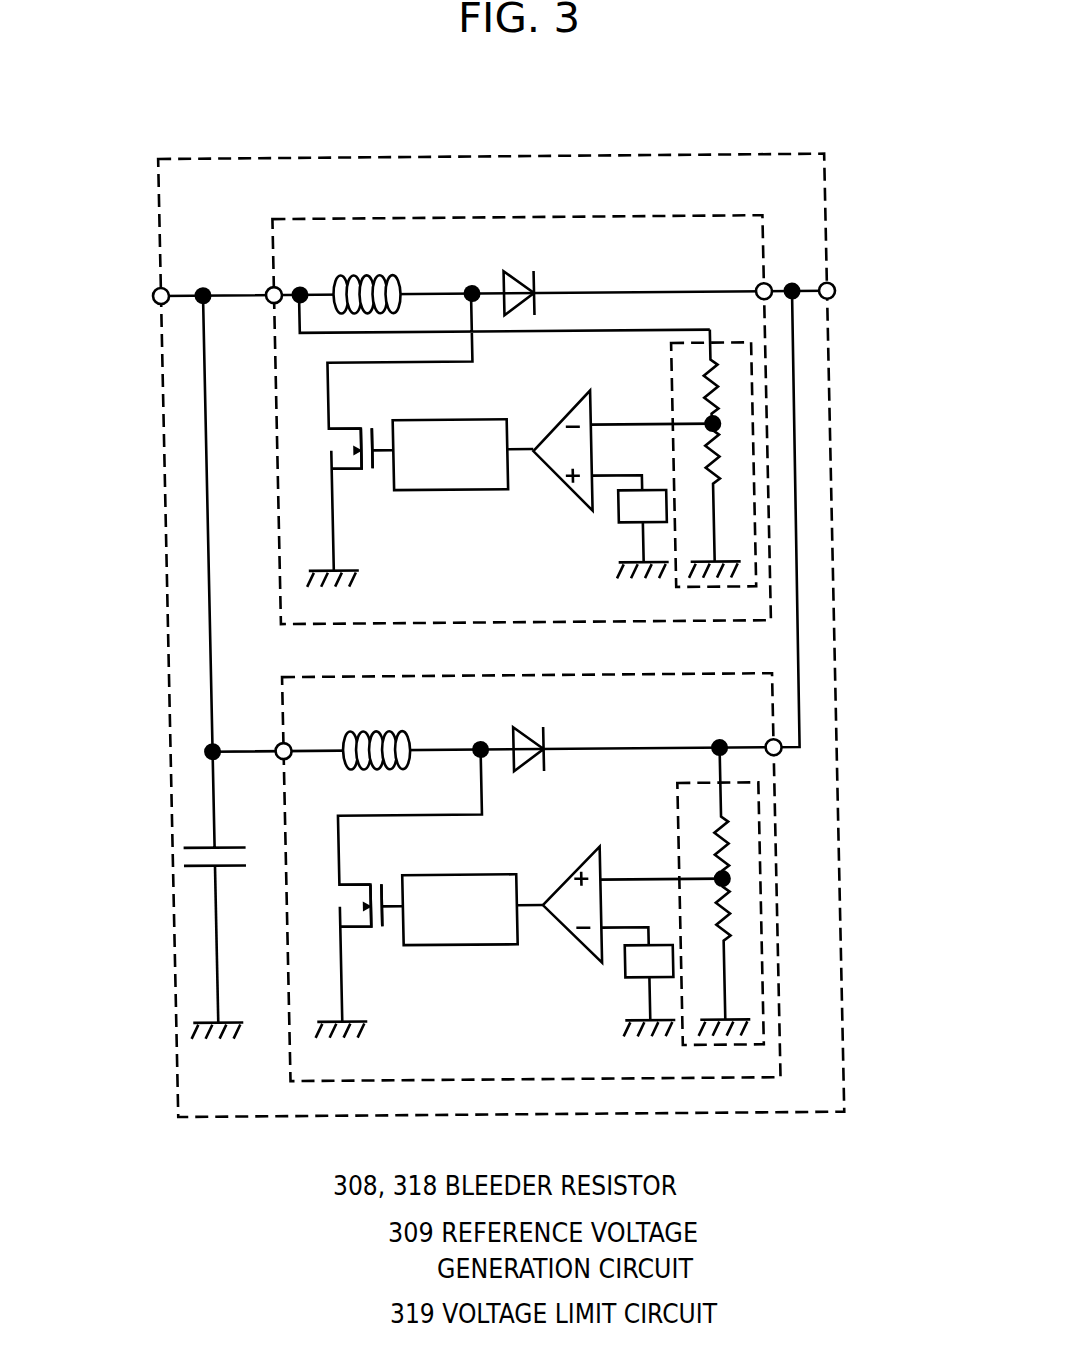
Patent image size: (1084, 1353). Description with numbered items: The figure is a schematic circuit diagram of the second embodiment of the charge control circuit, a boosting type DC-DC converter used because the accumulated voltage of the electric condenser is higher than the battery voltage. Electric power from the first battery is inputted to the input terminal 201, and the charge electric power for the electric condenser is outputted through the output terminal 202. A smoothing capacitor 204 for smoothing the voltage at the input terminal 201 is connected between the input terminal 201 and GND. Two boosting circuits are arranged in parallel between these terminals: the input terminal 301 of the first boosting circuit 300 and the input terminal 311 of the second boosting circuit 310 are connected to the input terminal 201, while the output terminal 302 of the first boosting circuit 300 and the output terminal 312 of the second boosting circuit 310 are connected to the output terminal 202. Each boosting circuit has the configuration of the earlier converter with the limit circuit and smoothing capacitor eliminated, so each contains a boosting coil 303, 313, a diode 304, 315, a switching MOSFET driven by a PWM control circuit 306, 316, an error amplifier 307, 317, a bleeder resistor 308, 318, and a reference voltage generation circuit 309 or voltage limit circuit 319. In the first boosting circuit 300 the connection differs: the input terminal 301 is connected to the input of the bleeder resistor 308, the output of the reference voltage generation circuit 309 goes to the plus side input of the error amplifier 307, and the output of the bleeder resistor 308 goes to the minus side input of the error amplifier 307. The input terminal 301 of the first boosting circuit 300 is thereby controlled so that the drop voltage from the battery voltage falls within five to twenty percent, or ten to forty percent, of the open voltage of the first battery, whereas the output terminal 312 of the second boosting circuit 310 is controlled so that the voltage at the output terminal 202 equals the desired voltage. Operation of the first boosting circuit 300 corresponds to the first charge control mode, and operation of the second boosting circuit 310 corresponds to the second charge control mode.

The input terminal 201 is at (157, 303).
The output terminal 202 is at (833, 308).
The smoothing capacitor 204 is at (230, 849).
The first boosting circuit 300 is at (509, 215).
The input terminal 301 is at (282, 287).
The output terminal 302 is at (758, 287).
The coil (inductor) 303 is at (383, 278).
The diode 304 is at (522, 276).
The switching transistor / PWM control circuit 306 is at (445, 422).
The error amplifier 307 is at (560, 421).
The bleeder resistor 308 is at (671, 409).
The reference voltage generation circuit 309 is at (613, 514).
The second boosting circuit 310 is at (514, 665).
The input terminal 311 is at (276, 746).
The output terminal 312 is at (758, 743).
The coil (inductor) 313 is at (386, 738).
The diode / switching transistor 315 is at (521, 736).
The power supply circuit / PWM control circuit 316 is at (520, 161).
The comparator (operational amplifier) 317 is at (566, 878).
The bleeder resistor 318 is at (669, 833).
The voltage limit circuit 319 is at (608, 968).